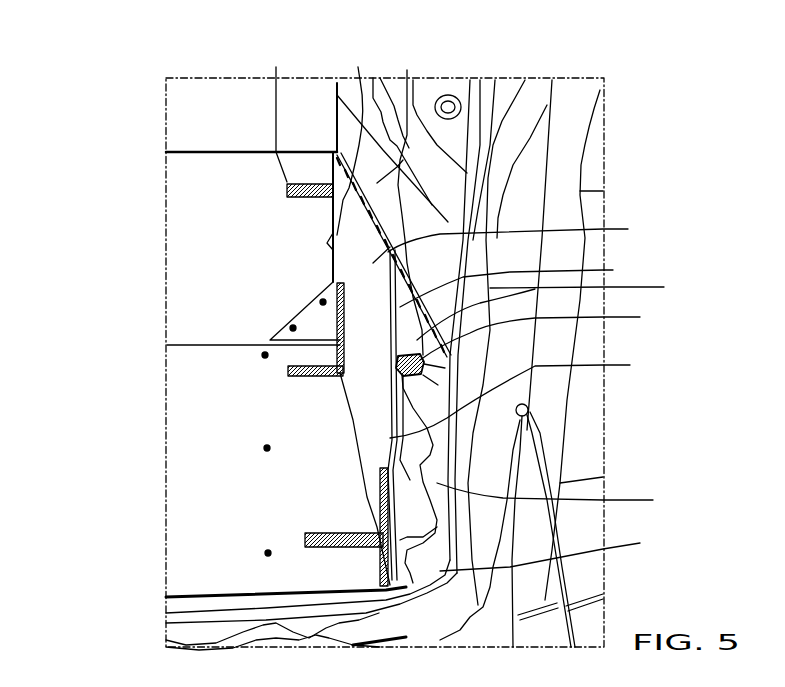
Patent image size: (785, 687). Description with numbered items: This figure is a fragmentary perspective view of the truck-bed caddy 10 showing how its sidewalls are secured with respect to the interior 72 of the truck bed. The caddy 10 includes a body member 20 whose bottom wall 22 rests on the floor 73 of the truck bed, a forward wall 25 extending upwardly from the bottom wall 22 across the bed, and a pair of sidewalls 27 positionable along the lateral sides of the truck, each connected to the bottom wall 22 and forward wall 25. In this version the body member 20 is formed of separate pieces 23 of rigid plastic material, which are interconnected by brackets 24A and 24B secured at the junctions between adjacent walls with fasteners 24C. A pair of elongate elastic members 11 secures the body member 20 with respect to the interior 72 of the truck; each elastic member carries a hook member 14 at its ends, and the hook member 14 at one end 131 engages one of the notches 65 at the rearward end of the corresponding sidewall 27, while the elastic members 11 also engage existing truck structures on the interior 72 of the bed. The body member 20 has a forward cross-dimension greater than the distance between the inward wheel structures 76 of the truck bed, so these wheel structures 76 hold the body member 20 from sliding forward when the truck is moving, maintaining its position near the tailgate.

The caddy 10 is at (128, 359).
The elongate elastic members 11 is at (516, 282).
The hook member 14 is at (383, 357).
The body member 20 is at (185, 250).
The bottom wall 22 is at (183, 527).
The separate pieces 23 is at (139, 405).
The bracket 24A is at (305, 183).
The bracket 24B is at (308, 315).
The fasteners 24C is at (276, 113).
The forward wall 25 is at (183, 193).
The sidewalls 27 is at (521, 326).
The notches 65 is at (523, 342).
The interior 72 is at (558, 360).
The floor 73 is at (553, 525).
The inward wheel structures 76 is at (402, 315).
The end 131 is at (558, 309).